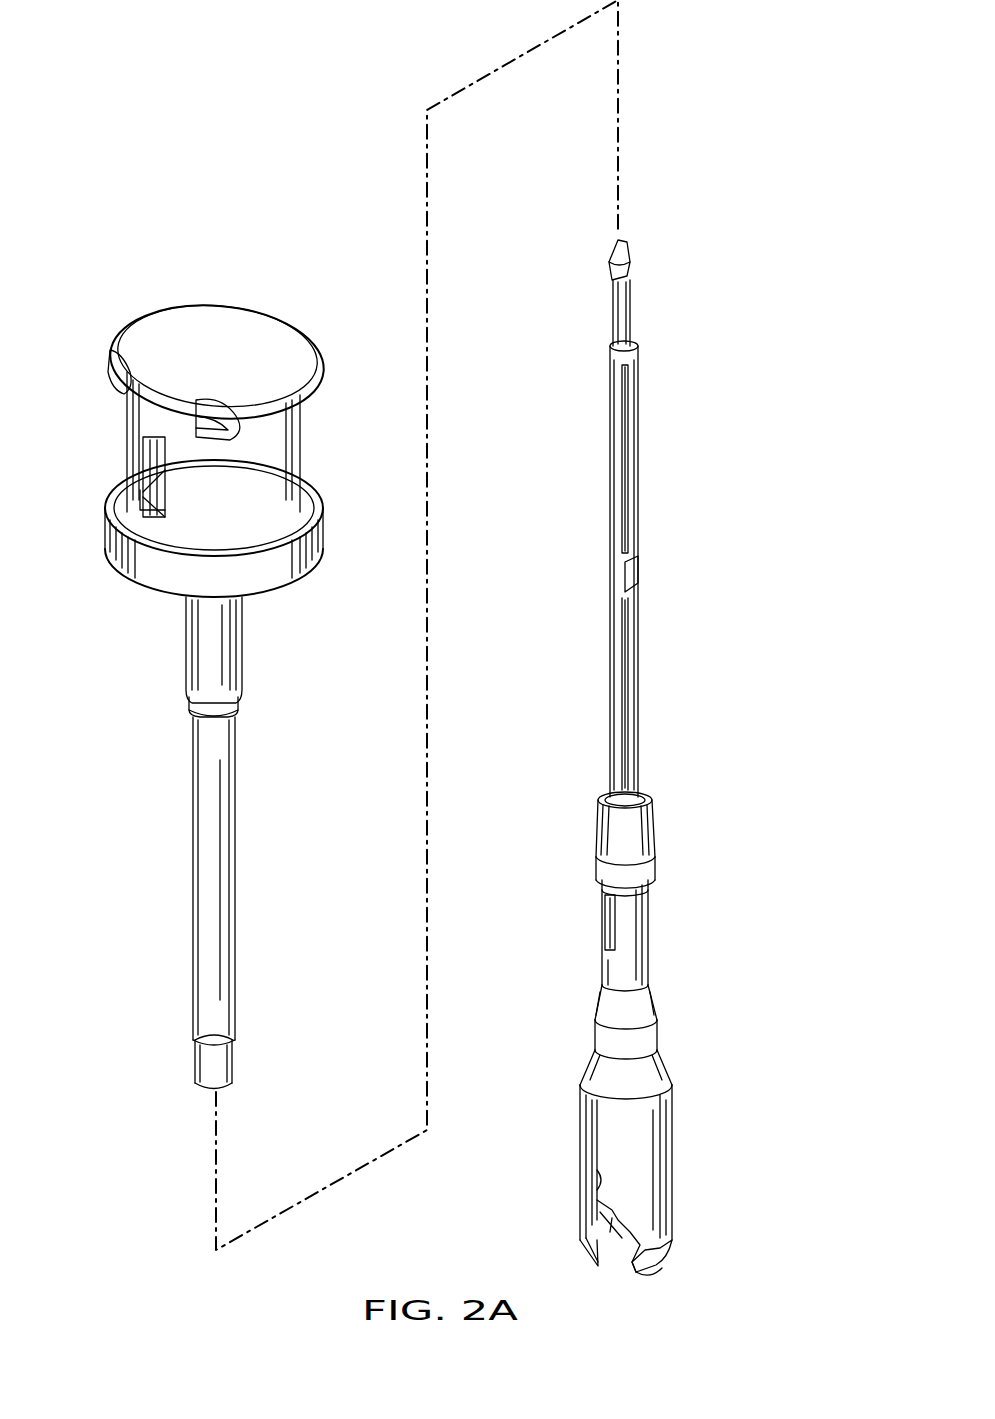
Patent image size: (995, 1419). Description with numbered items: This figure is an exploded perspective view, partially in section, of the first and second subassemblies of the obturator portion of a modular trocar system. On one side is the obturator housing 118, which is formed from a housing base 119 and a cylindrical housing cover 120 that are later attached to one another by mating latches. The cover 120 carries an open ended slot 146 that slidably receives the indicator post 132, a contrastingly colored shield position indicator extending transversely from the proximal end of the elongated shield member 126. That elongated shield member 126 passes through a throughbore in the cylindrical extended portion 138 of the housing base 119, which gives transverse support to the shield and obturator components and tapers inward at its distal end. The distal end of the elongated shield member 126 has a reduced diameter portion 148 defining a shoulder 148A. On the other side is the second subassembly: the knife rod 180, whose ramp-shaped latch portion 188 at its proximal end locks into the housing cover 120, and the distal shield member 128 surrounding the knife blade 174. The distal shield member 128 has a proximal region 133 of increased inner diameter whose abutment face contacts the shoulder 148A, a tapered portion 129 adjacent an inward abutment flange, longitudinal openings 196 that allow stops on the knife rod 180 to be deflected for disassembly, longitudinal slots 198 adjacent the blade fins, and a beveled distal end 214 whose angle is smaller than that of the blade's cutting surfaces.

The obturator housing 118 is at (316, 442).
The cylindrical housing cover 120 is at (236, 499).
The open ended slot 146 is at (155, 445).
The indicator post 132 is at (150, 497).
The housing base 119 is at (262, 580).
The cylindrical extended portion 138 is at (218, 680).
The elongated shield member 126 is at (218, 892).
The shoulder 148A is at (216, 1042).
The reduced diameter portion 148 is at (218, 1082).
The distal shield member 128 is at (688, 975).
The latch portion 188 is at (611, 257).
The knife rod 180 is at (612, 572).
The proximal region 133 is at (628, 834).
The longitudinal openings 196 is at (605, 910).
The tapered portion 129 is at (643, 1085).
The longitudinal slots 198 is at (598, 1158).
The knife blade 174 is at (606, 1240).
The beveled distal end 214 is at (652, 1265).